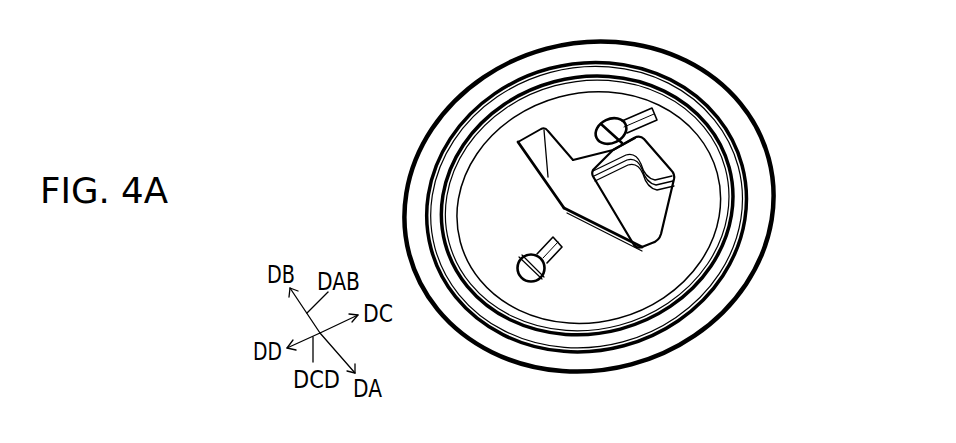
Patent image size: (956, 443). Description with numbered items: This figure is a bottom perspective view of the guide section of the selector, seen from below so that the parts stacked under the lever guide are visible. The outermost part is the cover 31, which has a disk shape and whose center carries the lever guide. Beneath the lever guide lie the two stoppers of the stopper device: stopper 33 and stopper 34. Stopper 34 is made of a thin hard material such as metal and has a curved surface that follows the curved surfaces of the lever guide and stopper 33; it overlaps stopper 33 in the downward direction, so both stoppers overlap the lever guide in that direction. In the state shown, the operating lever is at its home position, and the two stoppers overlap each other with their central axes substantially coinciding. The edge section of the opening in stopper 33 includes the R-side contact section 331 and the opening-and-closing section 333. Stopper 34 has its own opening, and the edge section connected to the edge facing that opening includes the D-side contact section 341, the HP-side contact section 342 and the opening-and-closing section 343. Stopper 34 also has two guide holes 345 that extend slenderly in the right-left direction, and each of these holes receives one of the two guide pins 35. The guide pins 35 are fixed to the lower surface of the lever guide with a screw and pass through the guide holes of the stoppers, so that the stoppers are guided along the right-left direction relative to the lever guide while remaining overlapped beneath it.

The cover 31 is at (718, 78).
The stopper 33 is at (740, 172).
The R-side contact section 331 is at (530, 147).
The opening-and-closing section 333 is at (618, 185).
The stopper 34 is at (668, 283).
The D-side contact section 341 is at (592, 228).
The HP-side contact section 342 is at (668, 152).
The opening-and-closing section 343 is at (577, 152).
The guide hole 345 is at (641, 110).
The guide pin 35 is at (619, 124).